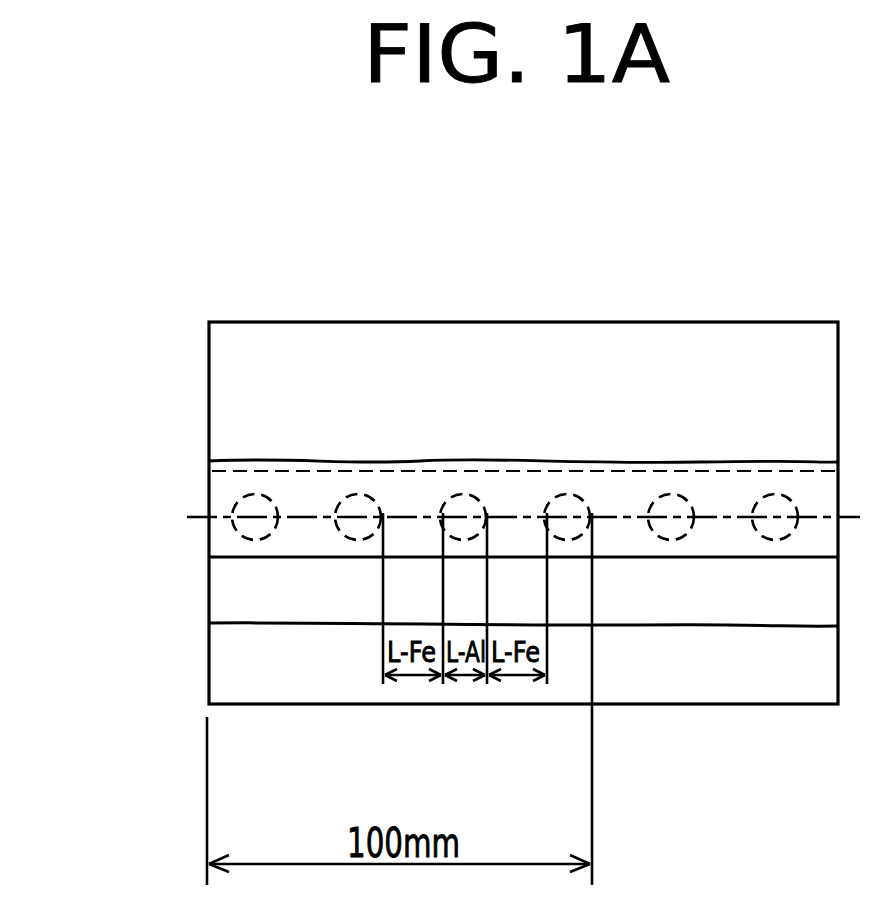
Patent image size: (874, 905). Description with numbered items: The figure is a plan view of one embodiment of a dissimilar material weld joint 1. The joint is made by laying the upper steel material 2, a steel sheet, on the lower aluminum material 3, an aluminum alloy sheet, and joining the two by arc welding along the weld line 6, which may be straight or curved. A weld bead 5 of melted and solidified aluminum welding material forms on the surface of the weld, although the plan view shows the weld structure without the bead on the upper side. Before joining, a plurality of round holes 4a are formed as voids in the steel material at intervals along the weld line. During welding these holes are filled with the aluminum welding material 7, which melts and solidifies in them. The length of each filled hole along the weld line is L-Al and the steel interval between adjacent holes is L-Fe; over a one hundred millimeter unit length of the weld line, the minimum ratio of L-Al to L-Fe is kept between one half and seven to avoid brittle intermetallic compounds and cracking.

The dissimilar material weld joint 1 is at (683, 289).
The steel material 2 is at (530, 340).
The aluminum material 3 is at (328, 655).
The round holes 4a is at (540, 560).
The weld bead 5 is at (685, 600).
The weld line 6 is at (200, 517).
The aluminum welding material 7 is at (528, 458).